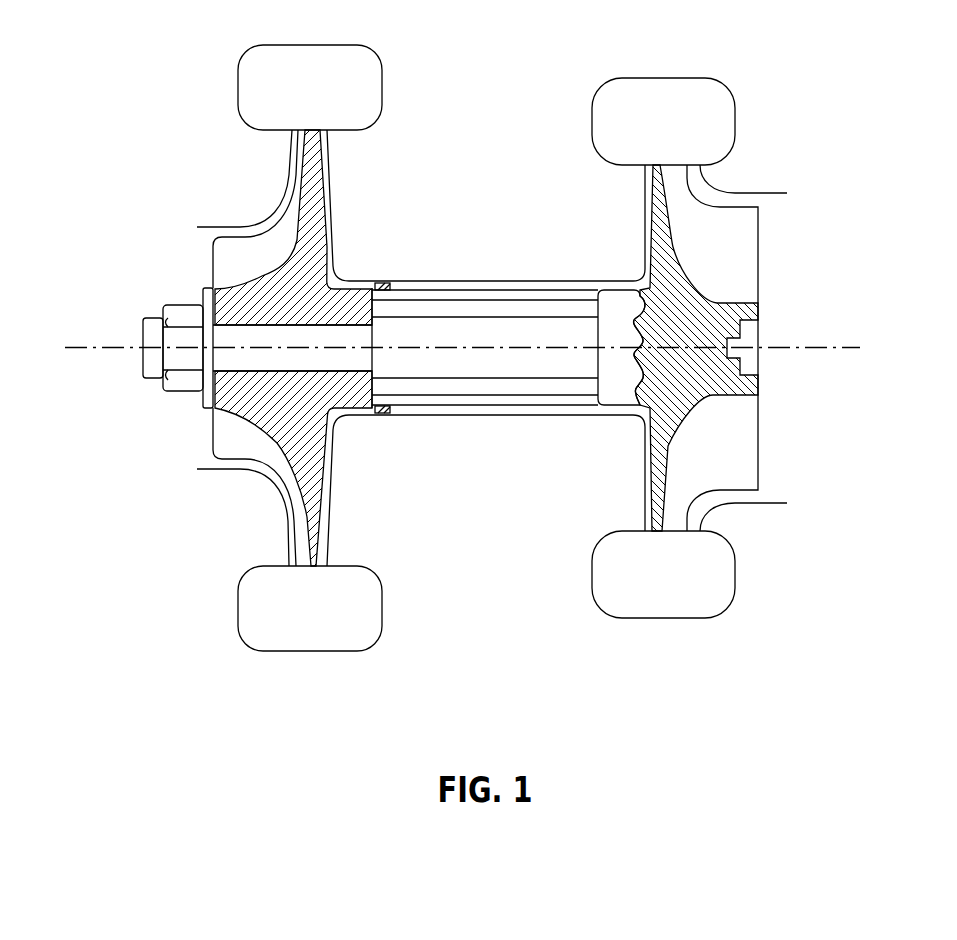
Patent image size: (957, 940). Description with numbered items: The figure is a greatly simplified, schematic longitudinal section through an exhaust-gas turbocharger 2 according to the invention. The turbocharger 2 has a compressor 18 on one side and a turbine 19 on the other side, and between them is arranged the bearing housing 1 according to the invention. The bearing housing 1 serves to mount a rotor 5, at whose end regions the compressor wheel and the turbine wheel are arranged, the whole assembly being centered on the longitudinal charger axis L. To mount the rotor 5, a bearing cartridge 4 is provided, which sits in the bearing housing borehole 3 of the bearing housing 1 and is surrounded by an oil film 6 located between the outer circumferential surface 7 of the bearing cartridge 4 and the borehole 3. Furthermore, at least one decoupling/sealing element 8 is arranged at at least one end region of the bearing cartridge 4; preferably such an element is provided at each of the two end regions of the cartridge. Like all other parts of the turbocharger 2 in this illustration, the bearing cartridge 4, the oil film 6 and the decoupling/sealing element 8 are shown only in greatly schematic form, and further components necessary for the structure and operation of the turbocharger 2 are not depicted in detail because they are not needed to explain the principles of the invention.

The bearing housing 1 is at (475, 281).
The exhaust-gas turbocharger 2 is at (493, 123).
The bearing housing borehole 3 is at (412, 287).
The bearing cartridge 4 is at (510, 310).
The rotor 5 is at (437, 363).
The oil film 6 is at (503, 398).
The outer circumferential surface 7 is at (543, 395).
The decoupling/sealing element 8 is at (378, 287).
The compressor 18 is at (343, 270).
The turbine 19 is at (628, 268).
The longitudinal charger axis L is at (783, 348).